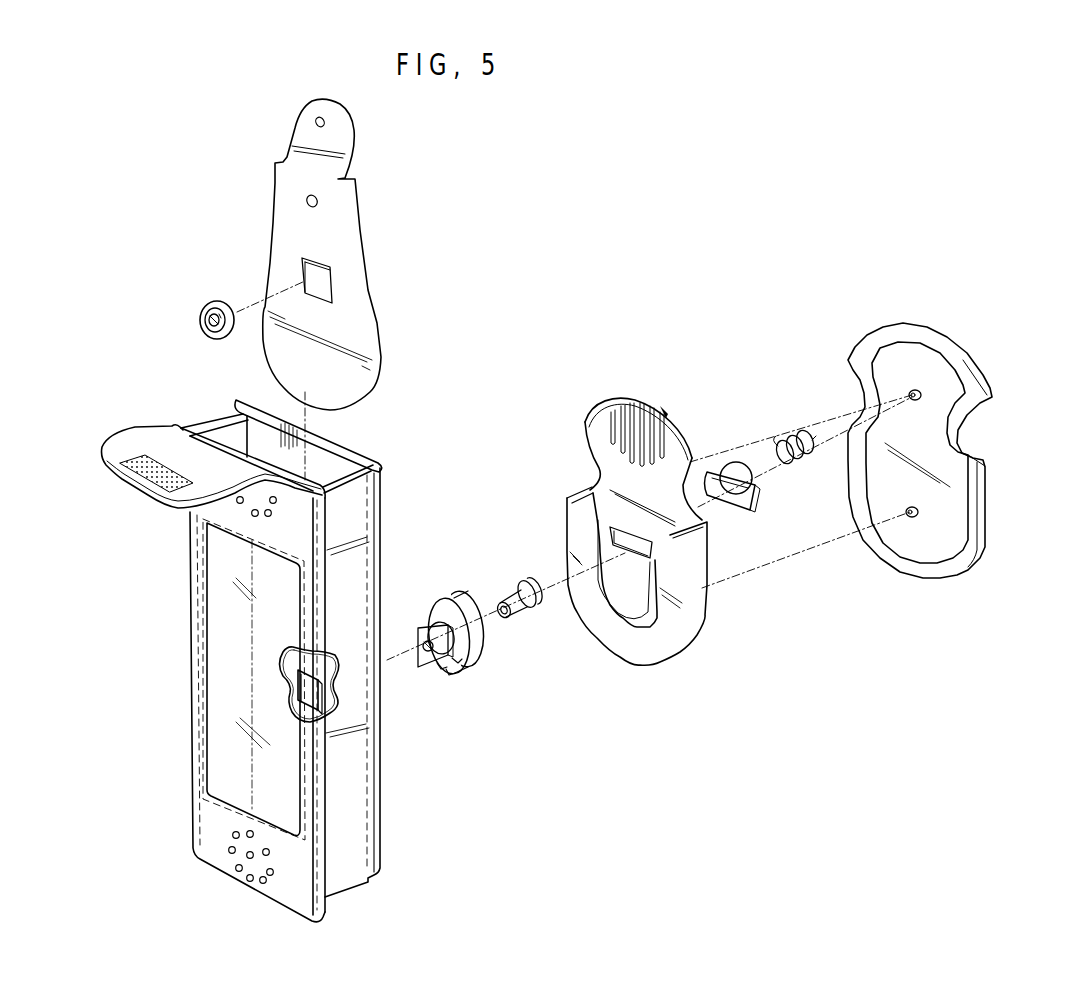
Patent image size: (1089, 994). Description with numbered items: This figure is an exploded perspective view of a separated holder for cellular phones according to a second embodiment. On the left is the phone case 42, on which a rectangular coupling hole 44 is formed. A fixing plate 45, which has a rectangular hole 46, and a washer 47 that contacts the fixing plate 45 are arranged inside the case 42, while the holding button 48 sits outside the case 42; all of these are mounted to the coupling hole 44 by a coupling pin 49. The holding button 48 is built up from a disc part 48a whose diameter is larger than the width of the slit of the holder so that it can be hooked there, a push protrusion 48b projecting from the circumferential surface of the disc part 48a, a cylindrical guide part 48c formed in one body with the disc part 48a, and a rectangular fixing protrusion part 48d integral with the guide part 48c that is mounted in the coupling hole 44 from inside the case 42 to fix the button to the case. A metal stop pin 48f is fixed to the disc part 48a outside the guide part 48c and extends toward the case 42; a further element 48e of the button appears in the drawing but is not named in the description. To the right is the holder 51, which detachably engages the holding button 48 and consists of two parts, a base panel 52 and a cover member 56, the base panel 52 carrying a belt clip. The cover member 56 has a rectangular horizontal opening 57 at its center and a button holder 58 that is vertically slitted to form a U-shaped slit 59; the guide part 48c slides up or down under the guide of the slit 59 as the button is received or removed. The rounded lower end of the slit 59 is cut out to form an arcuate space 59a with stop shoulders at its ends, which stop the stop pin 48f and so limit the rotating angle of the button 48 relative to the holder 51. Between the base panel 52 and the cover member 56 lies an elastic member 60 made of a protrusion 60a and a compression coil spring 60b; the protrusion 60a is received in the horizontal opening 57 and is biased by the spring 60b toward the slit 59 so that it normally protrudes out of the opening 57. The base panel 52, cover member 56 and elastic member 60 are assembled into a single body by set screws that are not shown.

The phone case 42 is at (191, 852).
The coupling hole 44 is at (298, 680).
The fixing plate 45 is at (273, 195).
The rectangular hole 46 is at (312, 275).
The washer 47 is at (208, 322).
The holding button 48 is at (506, 647).
The disc part 48a is at (472, 612).
The push protrusion 48b is at (450, 622).
The cylindrical guide part 48c is at (440, 624).
The rectangular fixing protrusion part 48d is at (420, 660).
The knob projection 48e is at (432, 675).
The metal stop pin 48f is at (452, 684).
The coupling pin 49 is at (538, 620).
The holder 51 is at (820, 708).
The base panel 52 is at (966, 568).
The cover member 56 is at (664, 412).
The rectangular horizontal opening 57 is at (602, 403).
The button holder 58 is at (739, 625).
The U-shaped slit 59 is at (632, 600).
The arcuate space 59a is at (608, 605).
The elastic member 60 is at (745, 350).
The protrusion 60a is at (722, 466).
The compression coil spring 60b is at (792, 435).